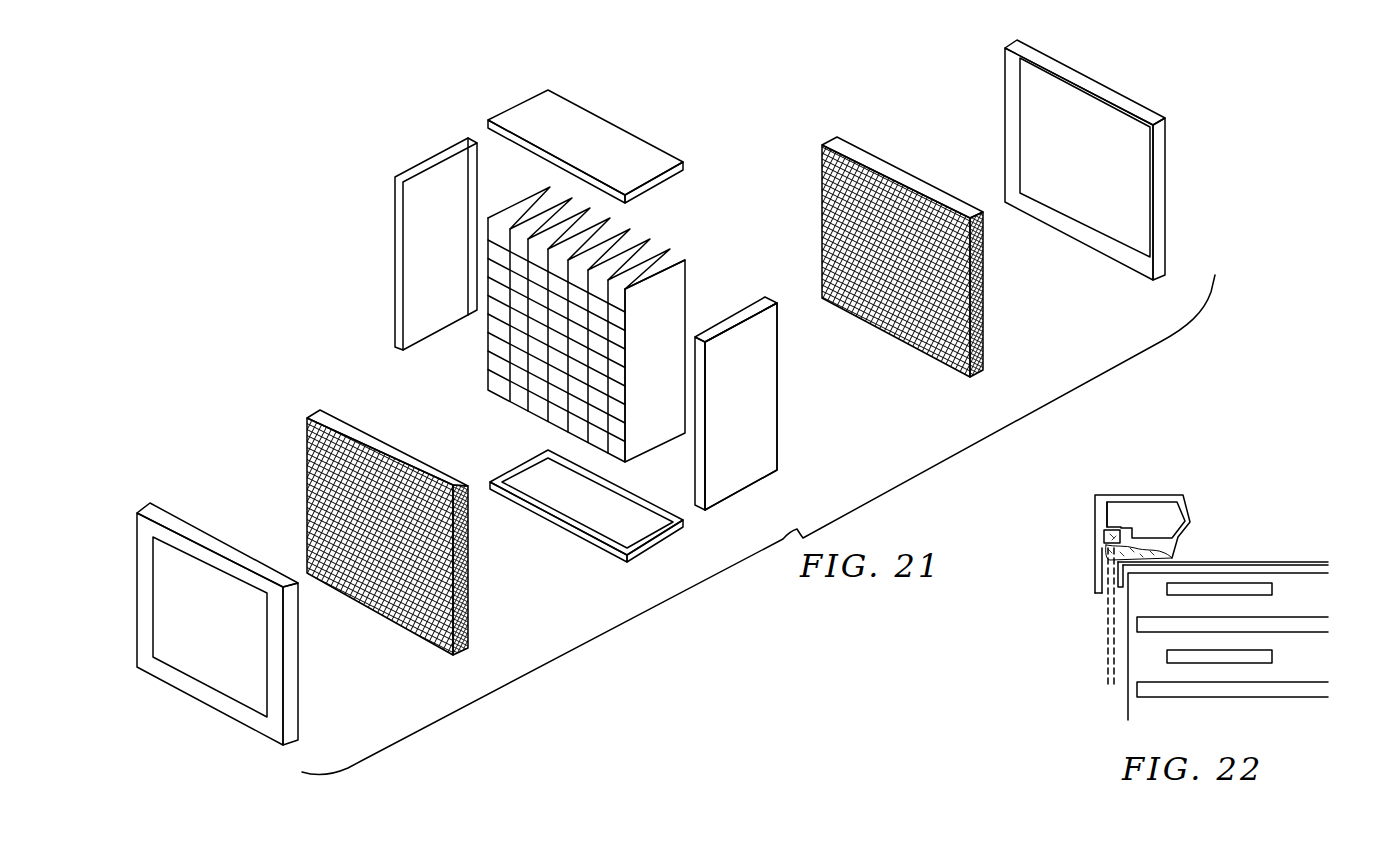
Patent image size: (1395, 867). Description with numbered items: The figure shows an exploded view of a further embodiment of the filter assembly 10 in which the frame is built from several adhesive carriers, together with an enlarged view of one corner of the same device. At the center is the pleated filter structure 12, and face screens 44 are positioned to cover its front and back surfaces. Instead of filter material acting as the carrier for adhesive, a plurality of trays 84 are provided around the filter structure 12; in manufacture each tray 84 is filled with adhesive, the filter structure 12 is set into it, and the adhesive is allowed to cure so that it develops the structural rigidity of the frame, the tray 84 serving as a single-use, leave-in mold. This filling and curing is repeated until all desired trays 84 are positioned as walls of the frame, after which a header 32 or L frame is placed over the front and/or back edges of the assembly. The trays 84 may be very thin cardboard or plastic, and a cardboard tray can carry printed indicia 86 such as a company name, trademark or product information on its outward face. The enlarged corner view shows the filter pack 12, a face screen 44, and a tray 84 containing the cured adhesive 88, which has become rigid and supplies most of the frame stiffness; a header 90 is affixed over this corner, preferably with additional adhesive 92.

In FIG. 21, the filter assembly 10 is at (446, 115).
In FIG. 21, the filter structure 12 is at (533, 188).
In FIG. 22, the filter structure 12 is at (1148, 610).
In FIG. 21, the header 32 is at (292, 667).
In FIG. 21, the face screen 44 is at (305, 450).
In FIG. 22, the face screen 44 is at (1110, 658).
In FIG. 21, the tray 84 is at (418, 167).
In FIG. 22, the tray 84 is at (1248, 562).
In FIG. 21, the indicia 86 is at (758, 367).
In FIG. 22, the cured adhesive 88 is at (1287, 570).
In FIG. 22, the header 90 is at (1145, 497).
In FIG. 22, the additional adhesive 92 is at (1107, 552).